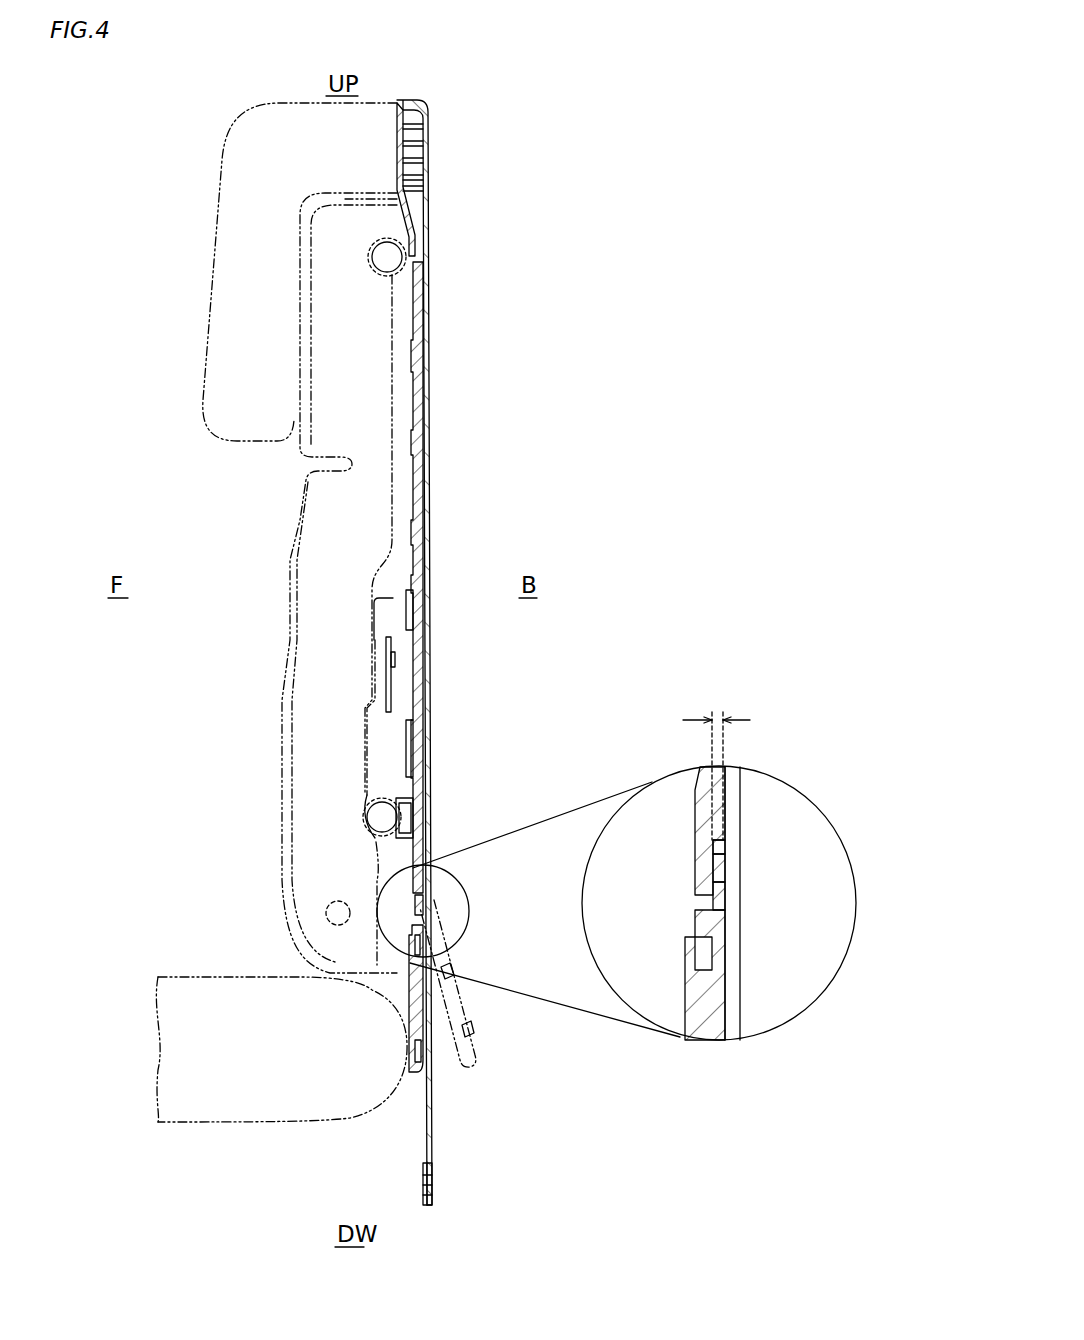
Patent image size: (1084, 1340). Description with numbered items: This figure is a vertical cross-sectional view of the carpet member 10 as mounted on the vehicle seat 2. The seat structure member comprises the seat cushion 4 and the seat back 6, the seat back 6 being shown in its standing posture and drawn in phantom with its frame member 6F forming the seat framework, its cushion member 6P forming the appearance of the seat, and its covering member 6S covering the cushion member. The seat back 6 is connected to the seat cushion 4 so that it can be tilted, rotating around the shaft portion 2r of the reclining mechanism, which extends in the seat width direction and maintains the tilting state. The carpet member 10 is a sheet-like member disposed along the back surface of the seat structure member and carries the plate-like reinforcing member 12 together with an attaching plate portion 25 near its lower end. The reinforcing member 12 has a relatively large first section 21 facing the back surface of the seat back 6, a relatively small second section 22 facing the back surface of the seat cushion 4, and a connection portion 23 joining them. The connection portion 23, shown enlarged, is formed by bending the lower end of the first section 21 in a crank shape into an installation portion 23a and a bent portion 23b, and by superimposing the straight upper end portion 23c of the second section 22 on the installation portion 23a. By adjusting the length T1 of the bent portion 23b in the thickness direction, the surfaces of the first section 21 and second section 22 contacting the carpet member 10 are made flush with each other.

The vehicle seat 2 is at (492, 178).
The seat cushion 4 is at (243, 1090).
The seat back 6 is at (214, 154).
The frame member 6F is at (365, 255).
The cushion member 6P is at (262, 383).
The covering member 6S is at (290, 620).
The carpet member 10 is at (430, 346).
The reinforcing member 12 is at (626, 684).
The first section 21 is at (421, 424).
The second section 22 is at (430, 1020).
The connection portion 23 is at (433, 904).
The installation portion 23a is at (715, 868).
The bent portion 23b is at (729, 850).
The upper end portion 23c is at (715, 883).
The attaching plate portion 25 is at (424, 1195).
The shaft portion 2r is at (324, 919).
The length of the bending portion T1 is at (716, 714).